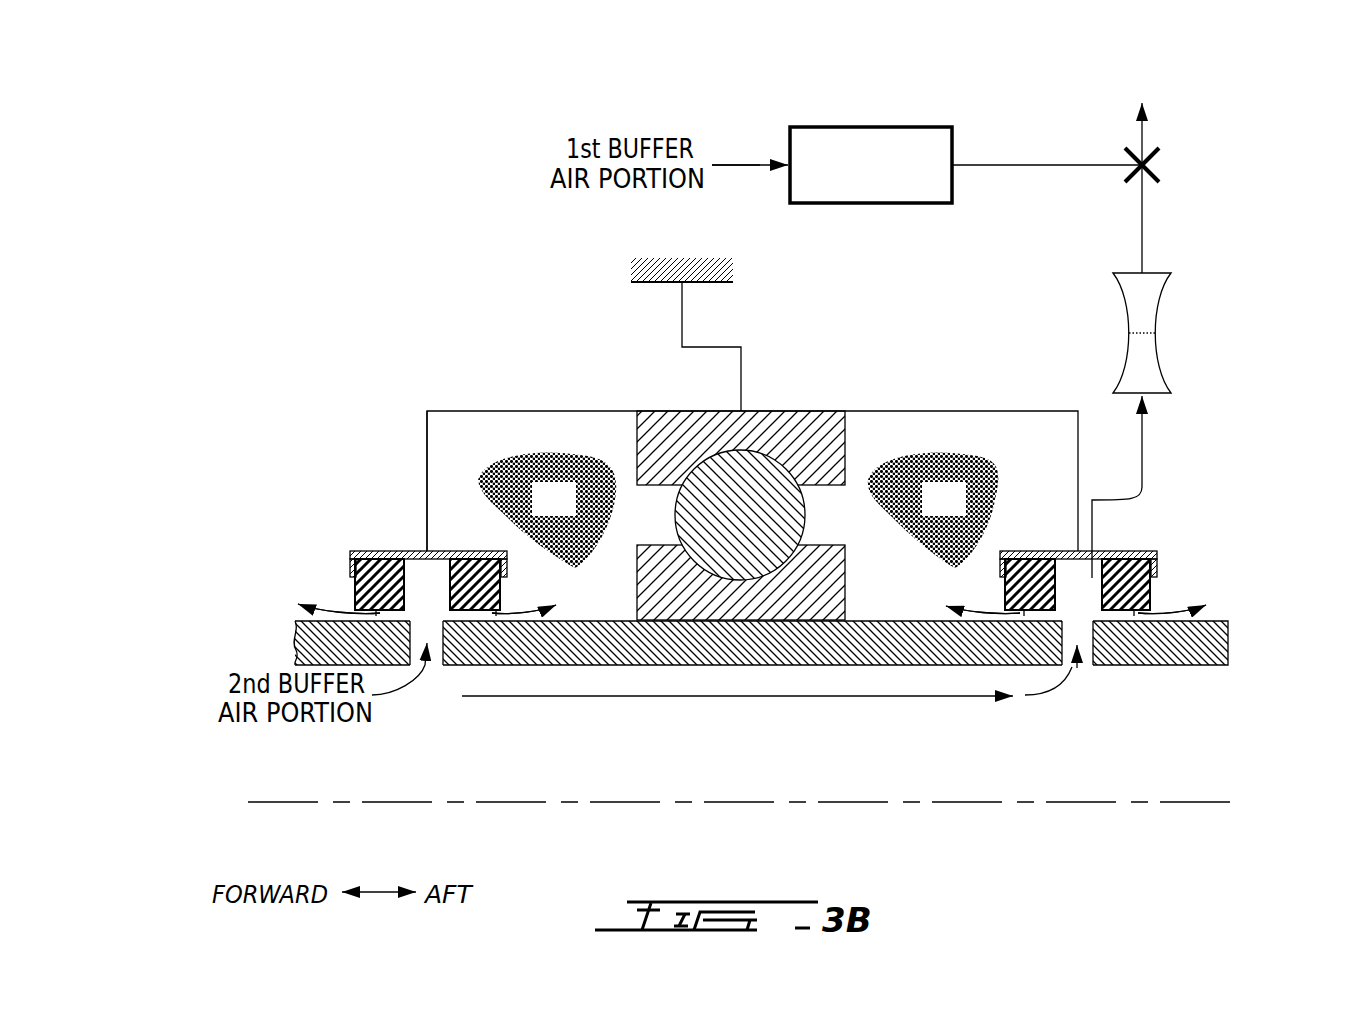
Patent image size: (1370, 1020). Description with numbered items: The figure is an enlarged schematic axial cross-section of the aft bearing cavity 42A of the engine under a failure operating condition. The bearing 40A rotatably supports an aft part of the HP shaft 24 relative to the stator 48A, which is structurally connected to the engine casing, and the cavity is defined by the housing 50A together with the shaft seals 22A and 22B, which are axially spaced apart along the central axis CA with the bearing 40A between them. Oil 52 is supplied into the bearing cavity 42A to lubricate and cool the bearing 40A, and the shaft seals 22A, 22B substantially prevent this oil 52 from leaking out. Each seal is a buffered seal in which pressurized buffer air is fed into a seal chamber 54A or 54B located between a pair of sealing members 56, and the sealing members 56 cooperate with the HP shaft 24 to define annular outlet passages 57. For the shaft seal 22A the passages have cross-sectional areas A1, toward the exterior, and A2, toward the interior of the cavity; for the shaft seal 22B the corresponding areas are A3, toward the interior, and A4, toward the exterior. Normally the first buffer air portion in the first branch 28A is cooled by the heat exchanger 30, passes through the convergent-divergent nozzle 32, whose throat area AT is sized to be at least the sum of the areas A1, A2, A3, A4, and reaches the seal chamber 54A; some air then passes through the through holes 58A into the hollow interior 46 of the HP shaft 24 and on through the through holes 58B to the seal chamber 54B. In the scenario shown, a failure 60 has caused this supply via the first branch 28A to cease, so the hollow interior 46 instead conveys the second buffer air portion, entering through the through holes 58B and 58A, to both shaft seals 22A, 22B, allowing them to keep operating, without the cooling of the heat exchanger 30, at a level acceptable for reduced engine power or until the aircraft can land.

The first branch 28A is at (742, 163).
The heat exchanger 30 is at (882, 177).
The failure 60 is at (1114, 152).
The convergent-divergent nozzle 32 is at (1135, 290).
The cross-sectional area of the throat AT is at (1135, 333).
The stator 48A is at (647, 283).
The aft bearing cavity 42A is at (478, 445).
The housing 50A is at (427, 428).
The bearing 40A is at (796, 384).
The oil 52 is at (562, 511).
The seal chamber 54B is at (418, 572).
The seal chamber 54A is at (1153, 557).
The sealing members 56 is at (380, 572).
The shaft seal 22B is at (404, 538).
The shaft seal 22A is at (1138, 526).
The outlet passages 57 is at (752, 610).
The cross-sectional area A4 is at (355, 607).
The cross-sectional area A3 is at (500, 607).
The cross-sectional area A2 is at (1005, 607).
The cross-sectional area A1 is at (1150, 607).
The HP shaft 24 is at (297, 632).
The through holes 58B is at (437, 655).
The through holes 58A is at (1083, 665).
The hollow interior 46 is at (760, 693).
The central axis CA is at (822, 801).